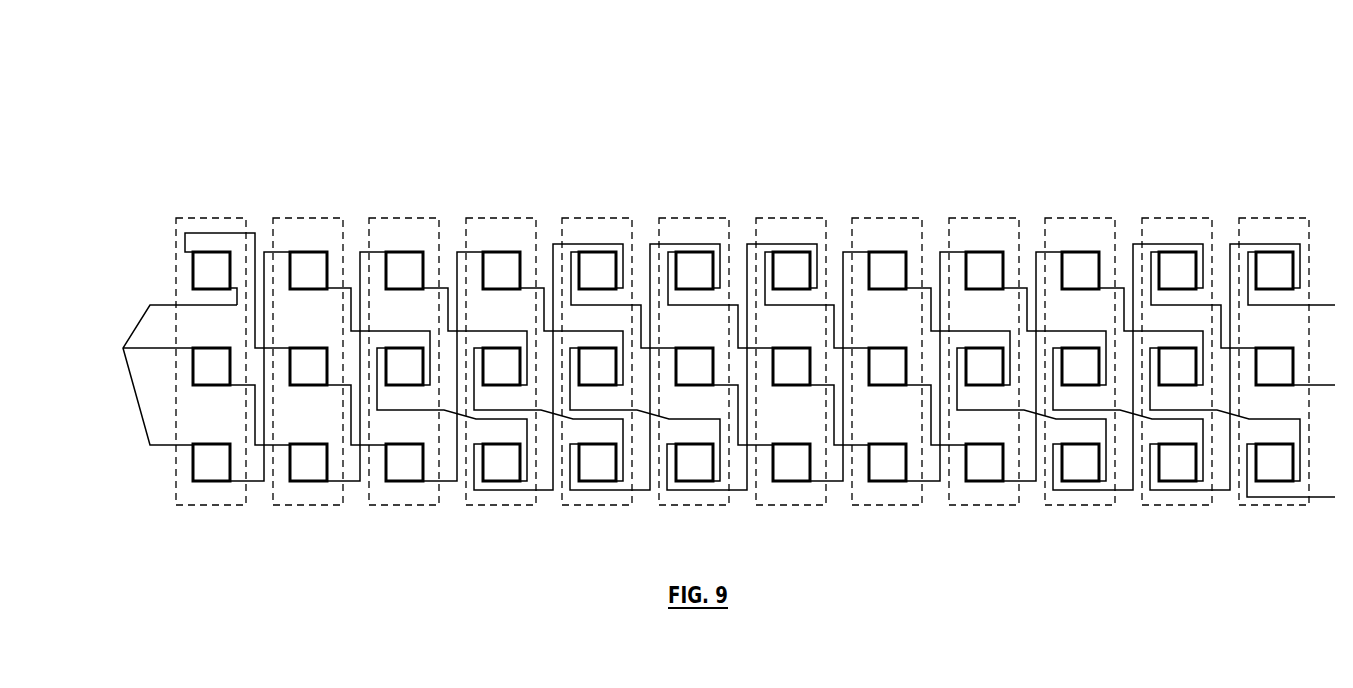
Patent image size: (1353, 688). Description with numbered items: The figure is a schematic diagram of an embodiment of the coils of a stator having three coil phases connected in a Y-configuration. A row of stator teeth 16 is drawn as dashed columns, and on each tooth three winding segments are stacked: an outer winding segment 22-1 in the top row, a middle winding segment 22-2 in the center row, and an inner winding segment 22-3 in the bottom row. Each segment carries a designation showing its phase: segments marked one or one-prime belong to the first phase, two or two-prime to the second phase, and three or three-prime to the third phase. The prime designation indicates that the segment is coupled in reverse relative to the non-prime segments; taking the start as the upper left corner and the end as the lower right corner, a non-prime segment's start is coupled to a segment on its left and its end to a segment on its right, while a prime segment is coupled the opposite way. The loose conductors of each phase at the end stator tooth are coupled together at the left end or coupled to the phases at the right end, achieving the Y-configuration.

The stator teeth 16 is at (793, 212).
The outer winding segment 22-1 is at (312, 182).
The middle winding segment 22-2 is at (156, 367).
The inner winding segment 22-3 is at (156, 463).